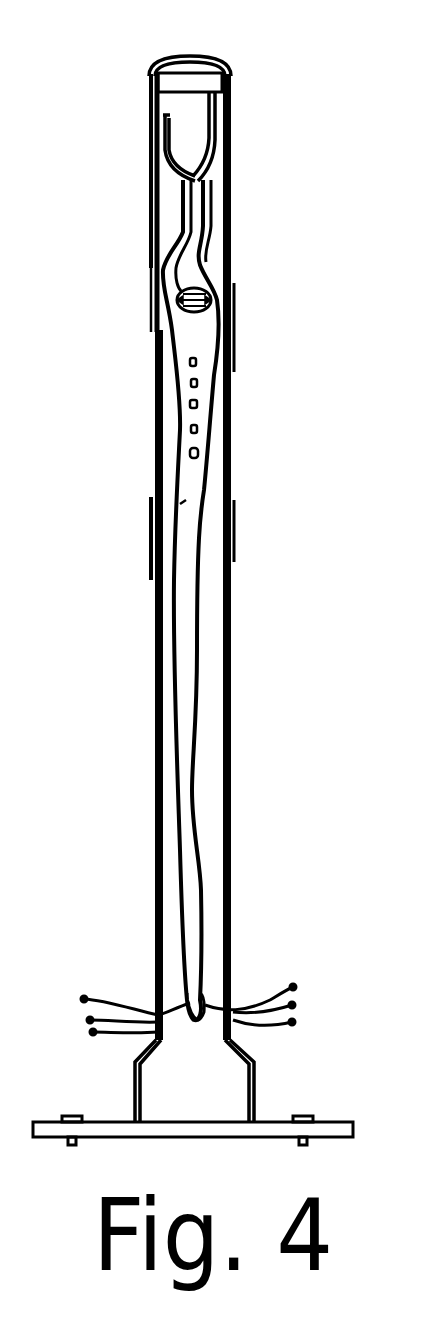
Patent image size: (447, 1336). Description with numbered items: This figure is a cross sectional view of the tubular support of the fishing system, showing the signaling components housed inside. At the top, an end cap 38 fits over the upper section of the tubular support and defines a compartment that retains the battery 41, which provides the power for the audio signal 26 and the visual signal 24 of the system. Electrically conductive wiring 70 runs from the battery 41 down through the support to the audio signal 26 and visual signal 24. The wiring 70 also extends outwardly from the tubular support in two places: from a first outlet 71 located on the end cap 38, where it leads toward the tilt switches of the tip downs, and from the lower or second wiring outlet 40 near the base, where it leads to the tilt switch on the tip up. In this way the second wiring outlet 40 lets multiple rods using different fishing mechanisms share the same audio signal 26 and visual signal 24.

The end cap 38 is at (150, 78).
The battery 41 is at (233, 70).
The first outlet 71 is at (153, 133).
The electrically conductive wiring 70 is at (205, 219).
The audio signal 26 is at (205, 288).
The visual signal 24 is at (200, 407).
The second wiring outlet 40 is at (240, 1007).